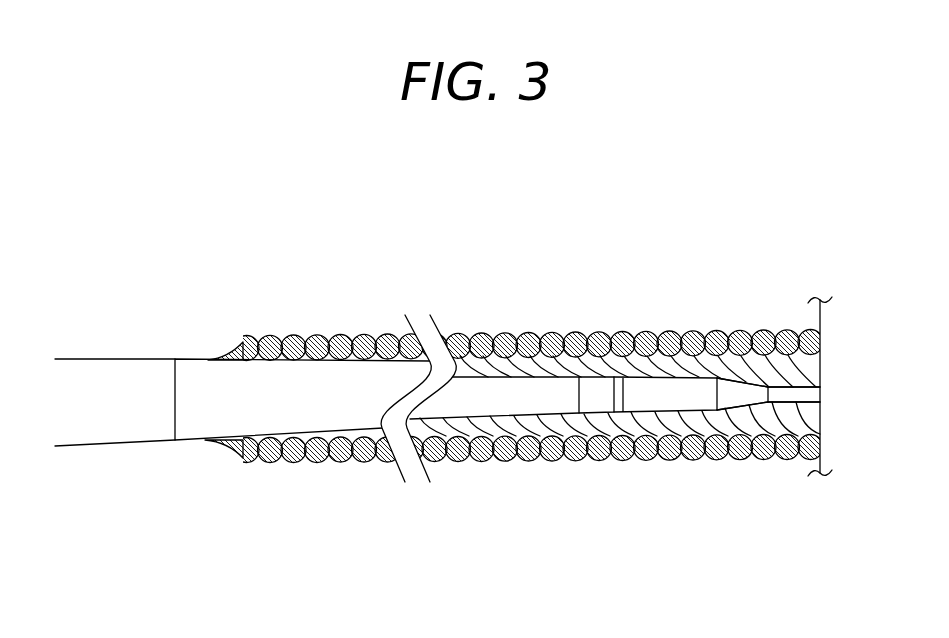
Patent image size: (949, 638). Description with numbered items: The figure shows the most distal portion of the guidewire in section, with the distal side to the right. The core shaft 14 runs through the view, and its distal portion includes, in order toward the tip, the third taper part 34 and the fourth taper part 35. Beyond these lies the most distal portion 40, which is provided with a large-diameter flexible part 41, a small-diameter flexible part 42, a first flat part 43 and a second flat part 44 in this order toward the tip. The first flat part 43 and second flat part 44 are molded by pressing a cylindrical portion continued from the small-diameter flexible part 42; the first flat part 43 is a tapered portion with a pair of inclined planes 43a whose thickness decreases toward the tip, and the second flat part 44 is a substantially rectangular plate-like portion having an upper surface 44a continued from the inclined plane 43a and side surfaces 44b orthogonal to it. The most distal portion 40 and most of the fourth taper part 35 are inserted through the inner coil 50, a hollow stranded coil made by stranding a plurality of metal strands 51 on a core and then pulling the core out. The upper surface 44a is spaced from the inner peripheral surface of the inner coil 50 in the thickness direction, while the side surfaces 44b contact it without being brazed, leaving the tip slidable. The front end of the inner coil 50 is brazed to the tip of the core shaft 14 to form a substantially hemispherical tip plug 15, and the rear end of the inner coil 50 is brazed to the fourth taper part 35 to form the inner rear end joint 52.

The core shaft 14 is at (242, 475).
The third taper part 34 is at (115, 418).
The fourth taper part 35 is at (210, 415).
The inner rear end joint 52 is at (233, 345).
The inner coil 50 is at (528, 321).
The metal strands 51 is at (474, 334).
The most distal portion 40 is at (667, 385).
The large-diameter flexible part 41 is at (597, 392).
The small-diameter flexible part 42 is at (652, 397).
The first flat part 43 is at (722, 388).
The inclined planes 43a is at (735, 385).
The second flat part 44 is at (846, 321).
The upper surface 44a is at (821, 363).
The side surfaces 44b is at (782, 388).
The tip plug 15 is at (813, 463).